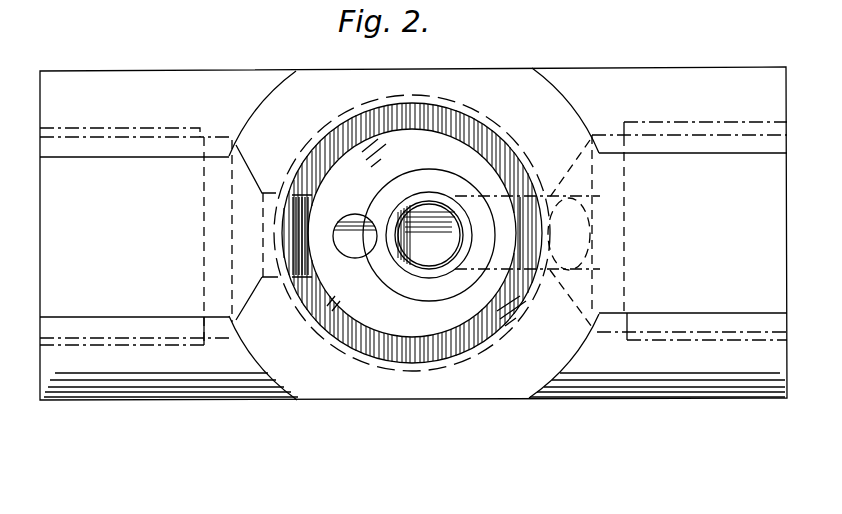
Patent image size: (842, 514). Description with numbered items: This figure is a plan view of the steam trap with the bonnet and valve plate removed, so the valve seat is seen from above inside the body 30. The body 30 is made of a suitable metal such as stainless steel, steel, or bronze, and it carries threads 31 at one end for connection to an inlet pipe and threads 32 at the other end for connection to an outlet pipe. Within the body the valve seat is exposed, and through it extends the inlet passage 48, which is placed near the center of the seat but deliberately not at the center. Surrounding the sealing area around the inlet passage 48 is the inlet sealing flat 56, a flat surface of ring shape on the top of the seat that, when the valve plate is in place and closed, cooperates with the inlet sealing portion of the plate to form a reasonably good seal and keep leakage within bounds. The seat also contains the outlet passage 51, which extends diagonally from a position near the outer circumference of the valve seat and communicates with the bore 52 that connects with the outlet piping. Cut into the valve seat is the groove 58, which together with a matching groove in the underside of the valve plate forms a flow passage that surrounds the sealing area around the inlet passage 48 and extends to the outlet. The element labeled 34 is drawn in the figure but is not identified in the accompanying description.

The body 30 is at (583, 72).
The threads 31 is at (705, 125).
The threads 32 is at (118, 130).
The hatched bushing ring 34 is at (337, 290).
The inlet passage 48 is at (460, 252).
The outlet passage 51 is at (356, 247).
The bore 52 is at (262, 256).
The inlet sealing flat 56 is at (404, 258).
The groove 58 is at (432, 293).